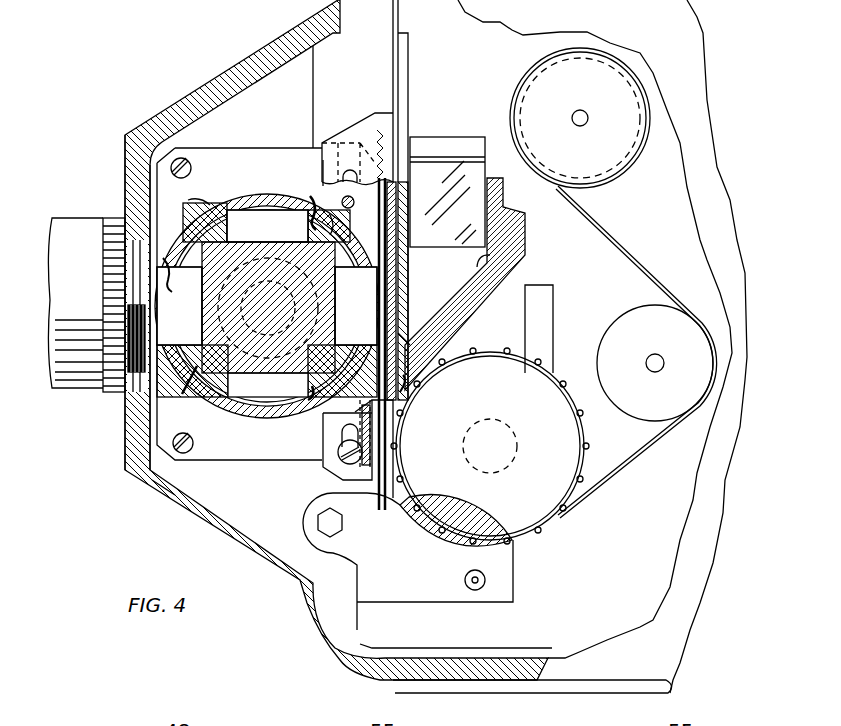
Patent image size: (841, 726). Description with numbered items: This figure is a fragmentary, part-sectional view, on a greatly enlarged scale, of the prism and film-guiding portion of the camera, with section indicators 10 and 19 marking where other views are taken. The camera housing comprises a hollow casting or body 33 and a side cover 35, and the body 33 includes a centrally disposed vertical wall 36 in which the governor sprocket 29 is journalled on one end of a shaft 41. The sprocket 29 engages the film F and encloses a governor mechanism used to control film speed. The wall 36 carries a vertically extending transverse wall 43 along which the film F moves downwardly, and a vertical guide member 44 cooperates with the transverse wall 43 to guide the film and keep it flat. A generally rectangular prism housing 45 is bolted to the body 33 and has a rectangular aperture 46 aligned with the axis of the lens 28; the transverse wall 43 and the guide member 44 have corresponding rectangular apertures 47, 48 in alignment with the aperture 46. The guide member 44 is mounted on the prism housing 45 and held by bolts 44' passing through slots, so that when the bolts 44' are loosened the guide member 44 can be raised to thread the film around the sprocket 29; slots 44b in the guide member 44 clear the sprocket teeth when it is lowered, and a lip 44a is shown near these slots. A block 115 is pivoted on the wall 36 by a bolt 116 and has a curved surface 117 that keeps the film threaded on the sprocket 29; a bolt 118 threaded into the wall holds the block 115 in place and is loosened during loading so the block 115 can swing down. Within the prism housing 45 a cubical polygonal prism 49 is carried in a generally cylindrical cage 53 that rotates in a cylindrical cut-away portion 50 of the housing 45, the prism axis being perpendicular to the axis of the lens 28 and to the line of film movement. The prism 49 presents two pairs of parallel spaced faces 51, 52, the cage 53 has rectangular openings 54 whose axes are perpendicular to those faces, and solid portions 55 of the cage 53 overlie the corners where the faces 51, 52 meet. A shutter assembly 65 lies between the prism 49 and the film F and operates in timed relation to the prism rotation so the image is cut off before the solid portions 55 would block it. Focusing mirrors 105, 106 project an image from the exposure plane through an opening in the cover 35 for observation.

The vertical wall 36 is at (270, 82).
The side cover 35 is at (718, 515).
The body 33 is at (152, 490).
The lens 28 is at (58, 232).
The section line 10 is at (110, 303).
The prism housing 45 is at (200, 152).
The cylindrical cut-away portion 50 is at (245, 197).
The cage 53 is at (213, 227).
The prism faces 52 is at (262, 242).
The prism faces 51 is at (203, 318).
The rectangular aperture 46 is at (170, 260).
The rectangular openings 54 is at (231, 234).
The polygonal prism 49 is at (268, 307).
The solid portions 55 is at (313, 203).
The vertical guide member 44 is at (357, 145).
The shutter assembly 65 is at (386, 284).
The rectangular aperture 47 is at (388, 270).
The transverse wall 43 is at (406, 101).
The rectangular aperture 48 is at (407, 333).
The mirror 106 is at (443, 170).
The mirror 105 is at (487, 262).
The bracket arm 44a is at (403, 391).
The slots 44b is at (386, 432).
The bolts 44' is at (334, 449).
The governor sprocket 29 is at (525, 405).
The shaft 41 is at (511, 463).
The section line 19 is at (490, 520).
The film F is at (624, 487).
The block 115 is at (408, 561).
The curved surface 117 is at (437, 530).
The bolt 116 is at (322, 515).
The bolt 118 is at (466, 583).